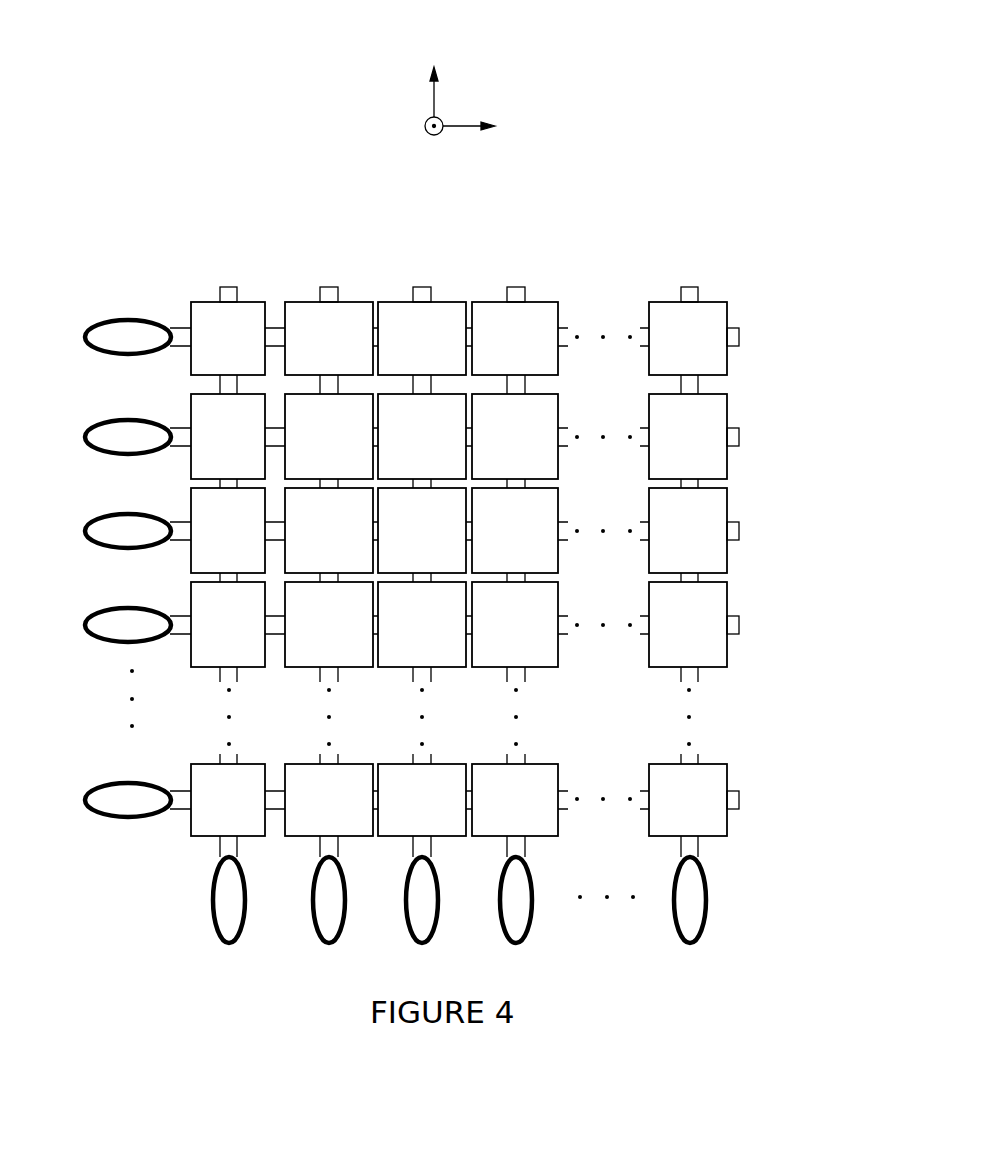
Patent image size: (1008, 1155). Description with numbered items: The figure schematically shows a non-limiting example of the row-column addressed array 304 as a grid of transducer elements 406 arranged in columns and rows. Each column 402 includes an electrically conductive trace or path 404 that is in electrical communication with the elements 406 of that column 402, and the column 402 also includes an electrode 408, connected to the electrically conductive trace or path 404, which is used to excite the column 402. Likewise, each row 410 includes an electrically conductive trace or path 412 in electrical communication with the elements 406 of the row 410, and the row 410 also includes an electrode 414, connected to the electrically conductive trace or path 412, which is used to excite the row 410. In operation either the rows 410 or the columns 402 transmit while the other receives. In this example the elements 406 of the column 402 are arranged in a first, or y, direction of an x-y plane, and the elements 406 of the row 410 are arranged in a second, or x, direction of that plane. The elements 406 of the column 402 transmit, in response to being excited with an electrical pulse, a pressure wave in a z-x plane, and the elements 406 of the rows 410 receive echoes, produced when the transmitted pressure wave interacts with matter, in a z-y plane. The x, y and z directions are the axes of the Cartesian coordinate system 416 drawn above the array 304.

The row-column addressed array 304 is at (111, 200).
The column 402 is at (400, 225).
The electrically conductive trace or path 404 is at (422, 287).
The element 406 is at (403, 322).
The electrode 408 is at (422, 902).
The row 410 is at (816, 519).
The electrically conductive trace or path 412 is at (738, 534).
The electrode 414 is at (130, 525).
The Cartesian coordinate system 416 is at (493, 79).